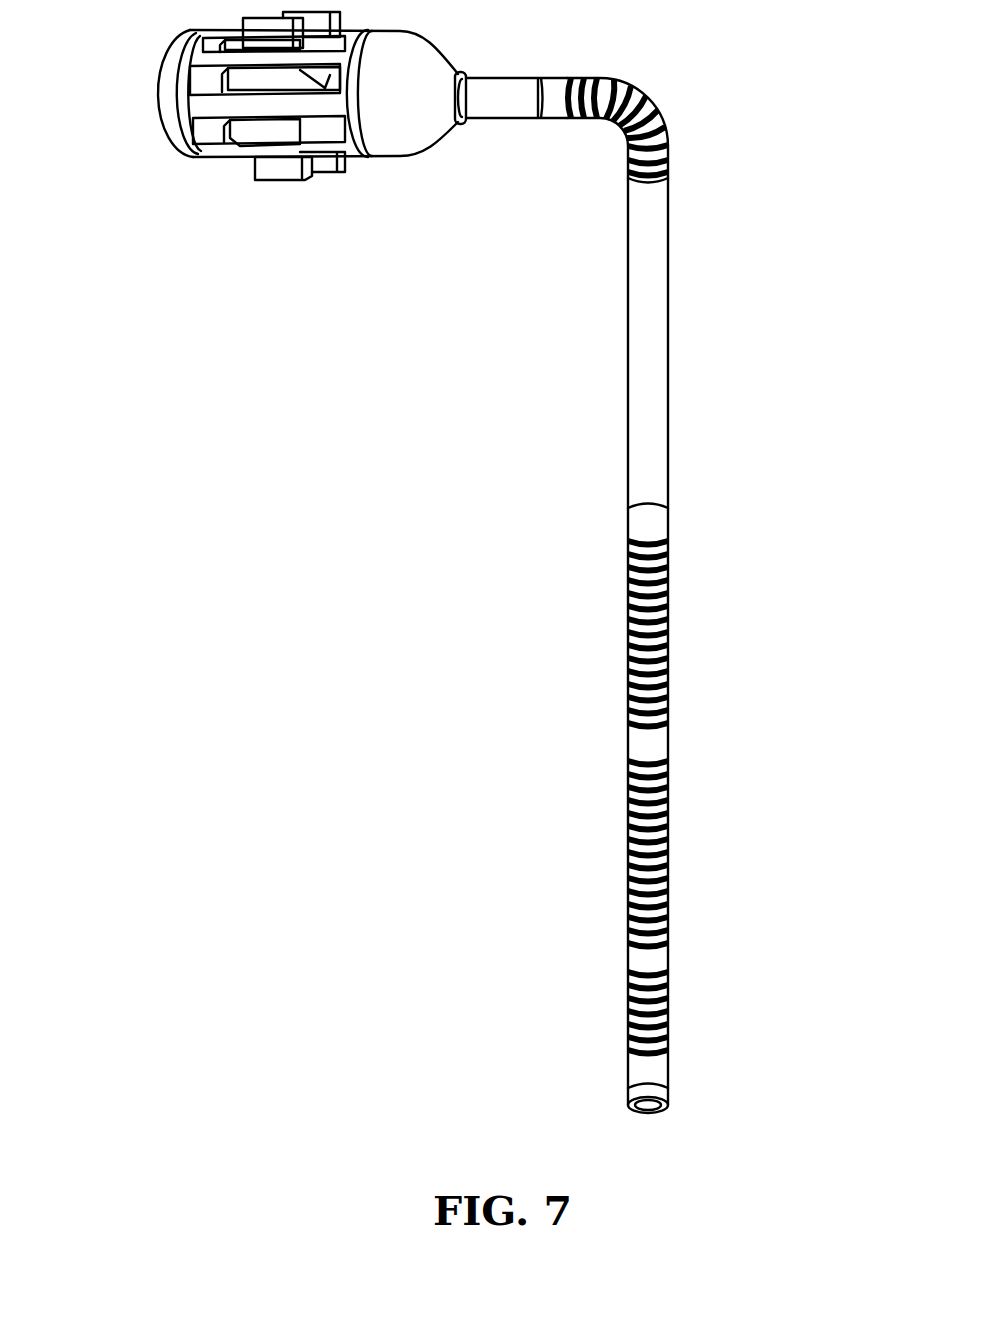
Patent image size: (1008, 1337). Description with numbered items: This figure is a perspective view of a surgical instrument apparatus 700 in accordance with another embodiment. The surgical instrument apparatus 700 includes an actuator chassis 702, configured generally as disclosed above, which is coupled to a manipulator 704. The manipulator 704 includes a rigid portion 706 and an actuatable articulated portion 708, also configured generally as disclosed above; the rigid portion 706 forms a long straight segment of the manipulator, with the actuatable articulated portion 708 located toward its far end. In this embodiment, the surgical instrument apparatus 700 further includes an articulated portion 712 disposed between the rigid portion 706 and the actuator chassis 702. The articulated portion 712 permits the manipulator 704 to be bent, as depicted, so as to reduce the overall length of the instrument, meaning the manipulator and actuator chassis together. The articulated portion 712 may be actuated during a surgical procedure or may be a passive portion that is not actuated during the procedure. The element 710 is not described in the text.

The surgical instrument apparatus 700 is at (344, 537).
The actuator chassis 702 is at (137, 80).
The manipulator 704 is at (789, 554).
The rigid portion 706 is at (628, 368).
The actuatable articulated portion 708 is at (690, 511).
The distal tip 710 is at (628, 1107).
The articulated portion 712 is at (609, 139).